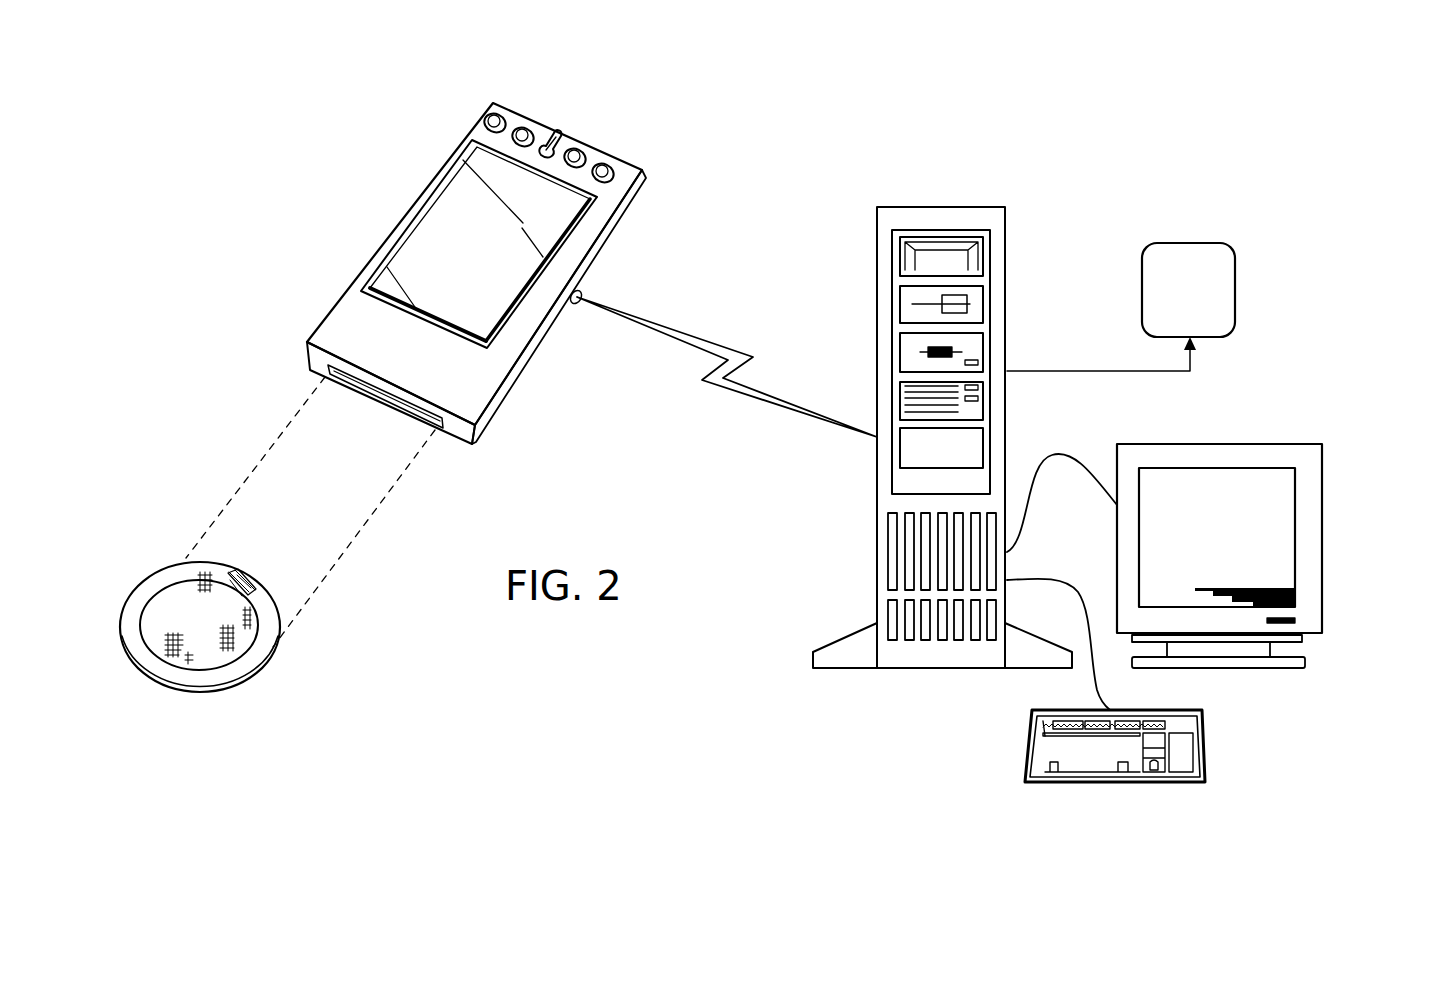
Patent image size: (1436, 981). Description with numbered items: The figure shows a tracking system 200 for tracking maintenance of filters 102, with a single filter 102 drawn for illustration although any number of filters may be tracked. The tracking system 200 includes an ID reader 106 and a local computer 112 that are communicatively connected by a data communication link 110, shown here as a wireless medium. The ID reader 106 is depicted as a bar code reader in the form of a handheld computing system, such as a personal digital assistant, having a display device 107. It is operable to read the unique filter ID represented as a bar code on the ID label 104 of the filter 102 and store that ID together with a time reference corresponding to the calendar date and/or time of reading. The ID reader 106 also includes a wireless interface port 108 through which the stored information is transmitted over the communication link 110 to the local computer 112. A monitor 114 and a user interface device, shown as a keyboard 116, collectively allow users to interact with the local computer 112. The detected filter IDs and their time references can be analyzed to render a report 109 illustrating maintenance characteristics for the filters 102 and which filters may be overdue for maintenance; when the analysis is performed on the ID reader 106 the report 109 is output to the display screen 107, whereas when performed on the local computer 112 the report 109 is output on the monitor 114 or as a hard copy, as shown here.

The tracking system 200 is at (1363, 135).
The filter 102 is at (146, 586).
The ID label 104 is at (258, 578).
The ID reader 106 is at (372, 252).
The display device 107 is at (452, 197).
The wireless interface port 108 is at (580, 298).
The report 109 is at (1236, 289).
The data communication link 110 is at (713, 387).
The local computer 112 is at (1007, 312).
The monitor 114 is at (1323, 485).
The keyboard 116 is at (1207, 747).